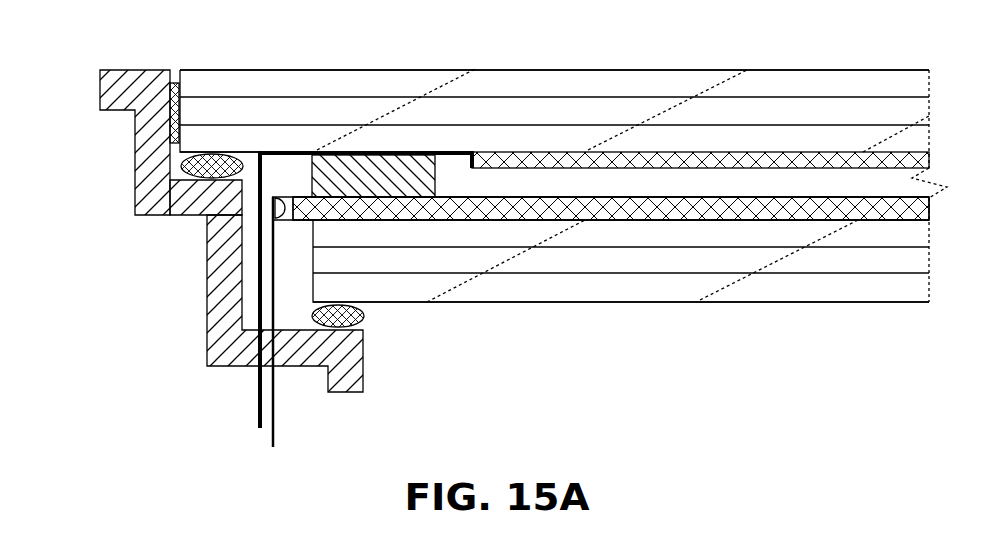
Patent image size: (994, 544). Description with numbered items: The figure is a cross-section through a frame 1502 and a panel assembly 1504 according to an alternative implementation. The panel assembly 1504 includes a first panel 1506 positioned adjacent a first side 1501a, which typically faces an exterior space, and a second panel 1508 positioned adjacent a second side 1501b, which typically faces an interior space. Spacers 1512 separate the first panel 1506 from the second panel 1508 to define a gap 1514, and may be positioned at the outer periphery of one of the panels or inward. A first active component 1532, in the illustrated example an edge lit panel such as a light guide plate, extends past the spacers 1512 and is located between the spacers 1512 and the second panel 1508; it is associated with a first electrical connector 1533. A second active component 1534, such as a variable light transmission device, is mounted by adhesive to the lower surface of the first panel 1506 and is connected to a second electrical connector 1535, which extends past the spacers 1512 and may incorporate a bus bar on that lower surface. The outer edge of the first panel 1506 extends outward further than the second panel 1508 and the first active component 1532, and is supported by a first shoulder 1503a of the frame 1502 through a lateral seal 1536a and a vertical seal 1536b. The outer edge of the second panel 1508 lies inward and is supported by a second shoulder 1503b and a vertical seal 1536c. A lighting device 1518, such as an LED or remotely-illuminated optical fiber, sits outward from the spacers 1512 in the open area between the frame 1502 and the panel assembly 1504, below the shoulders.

The frame 1502 is at (110, 49).
The first shoulder 1503a is at (176, 184).
The second shoulder 1503b is at (251, 336).
The panel assembly 1504 is at (270, 41).
The first panel 1506 is at (873, 70).
The second panel 1508 is at (872, 303).
The spacers 1512 is at (413, 167).
The gap 1514 is at (749, 178).
The lighting device 1518 is at (283, 197).
The first active component 1532 is at (520, 207).
The first electrical connector 1533 is at (273, 437).
The second active component 1534 is at (603, 160).
The second electrical connector 1535 is at (258, 408).
The lateral seal 1536a is at (174, 126).
The vertical seal 1536b is at (183, 163).
The vertical seal 1536c is at (357, 319).
The first side 1501a is at (836, 47).
The second side 1501b is at (836, 340).